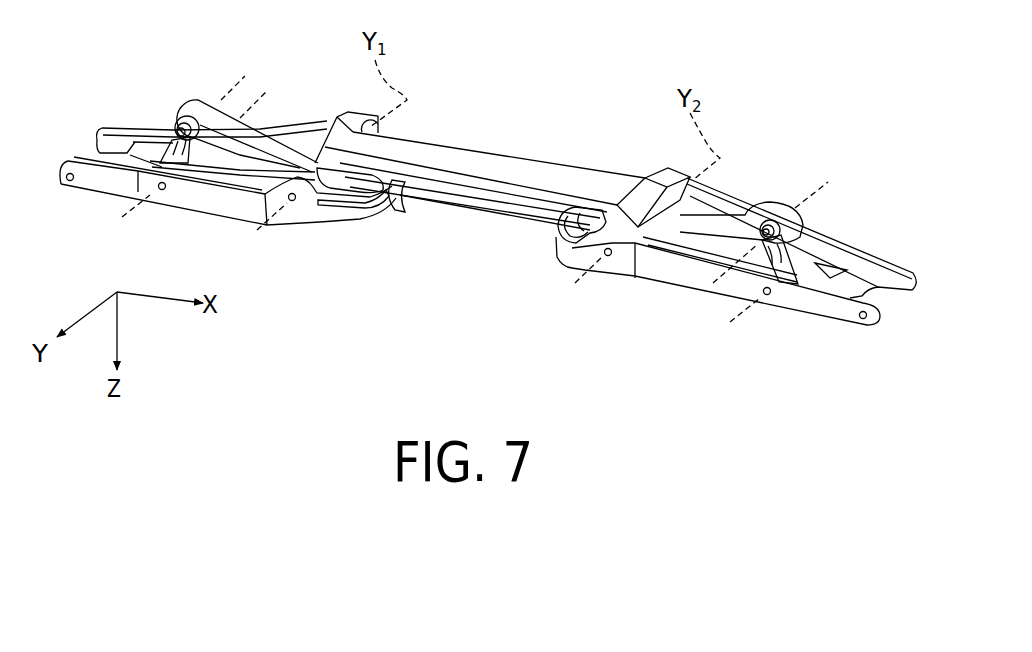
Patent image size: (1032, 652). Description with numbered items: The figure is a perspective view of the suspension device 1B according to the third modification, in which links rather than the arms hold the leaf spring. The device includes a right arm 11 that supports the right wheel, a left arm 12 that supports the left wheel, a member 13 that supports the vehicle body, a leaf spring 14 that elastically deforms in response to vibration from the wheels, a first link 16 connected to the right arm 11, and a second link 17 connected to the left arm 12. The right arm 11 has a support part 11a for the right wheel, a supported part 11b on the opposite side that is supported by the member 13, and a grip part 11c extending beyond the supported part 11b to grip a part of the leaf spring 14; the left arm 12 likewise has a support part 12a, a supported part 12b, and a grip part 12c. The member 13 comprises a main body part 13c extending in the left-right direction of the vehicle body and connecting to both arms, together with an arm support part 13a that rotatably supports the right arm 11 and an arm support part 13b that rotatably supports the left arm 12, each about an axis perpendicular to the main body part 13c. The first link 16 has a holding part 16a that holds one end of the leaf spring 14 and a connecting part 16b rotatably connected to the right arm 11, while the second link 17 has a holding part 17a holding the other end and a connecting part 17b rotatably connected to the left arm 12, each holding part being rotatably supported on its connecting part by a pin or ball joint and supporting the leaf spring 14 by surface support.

The suspension device 1B is at (517, 104).
The right arm 11 is at (232, 168).
The support part 11a is at (183, 192).
The supported part 11b is at (300, 217).
The grip part 11c is at (357, 217).
The left arm 12 is at (706, 261).
The support part 12a is at (690, 278).
The supported part 12b is at (617, 270).
The grip part 12c is at (560, 258).
The member 13 is at (499, 135).
The arm support part 13a is at (353, 122).
The arm support part 13b is at (667, 175).
The main body part 13c is at (553, 178).
The leaf spring 14 is at (460, 203).
The first link 16 is at (210, 97).
The holding part 16a is at (200, 92).
The connecting part 16b is at (168, 157).
The second link 17 is at (754, 247).
The holding part 17a is at (780, 207).
The connecting part 17b is at (782, 262).